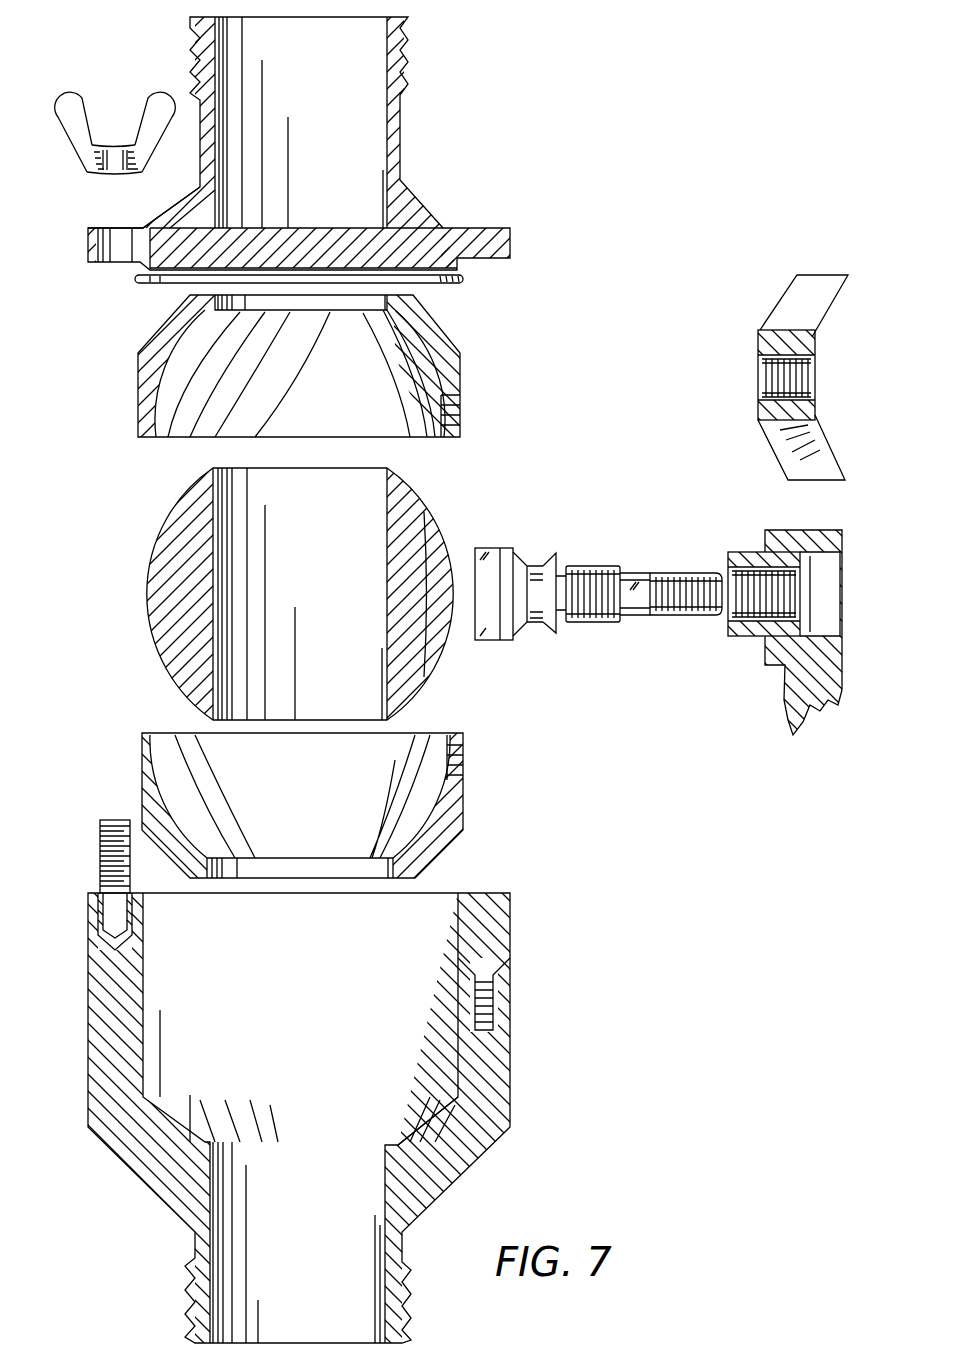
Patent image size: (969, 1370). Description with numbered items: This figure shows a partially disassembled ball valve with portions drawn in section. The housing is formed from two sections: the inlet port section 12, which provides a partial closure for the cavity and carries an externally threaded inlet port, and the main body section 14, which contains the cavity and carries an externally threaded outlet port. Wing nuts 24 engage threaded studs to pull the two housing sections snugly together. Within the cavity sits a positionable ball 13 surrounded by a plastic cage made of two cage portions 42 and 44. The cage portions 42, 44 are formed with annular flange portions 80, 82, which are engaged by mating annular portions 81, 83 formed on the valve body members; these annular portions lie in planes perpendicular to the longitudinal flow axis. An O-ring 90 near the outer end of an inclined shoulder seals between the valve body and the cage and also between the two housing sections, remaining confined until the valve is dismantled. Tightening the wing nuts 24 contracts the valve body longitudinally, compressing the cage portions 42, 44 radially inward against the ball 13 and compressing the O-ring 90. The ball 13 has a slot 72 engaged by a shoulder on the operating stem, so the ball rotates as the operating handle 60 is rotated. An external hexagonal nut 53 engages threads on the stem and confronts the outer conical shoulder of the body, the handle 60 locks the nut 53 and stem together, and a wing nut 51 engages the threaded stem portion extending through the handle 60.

The inlet port section 12 is at (299, 143).
The positionable ball 13 is at (293, 594).
The main body section 14 is at (339, 1118).
The wing nut 24 is at (64, 126).
The cage portion 42 is at (265, 337).
The cage portion 44 is at (468, 803).
The wing nut 51 is at (788, 297).
The external hexagonal nut 53 is at (757, 550).
The operating handle 60 is at (786, 688).
The slot 72 is at (436, 542).
The annular flange portion 80 is at (200, 880).
The annular portion 81 is at (397, 230).
The annular flange portion 82 is at (266, 293).
The annular portion 83 is at (396, 1143).
The O-ring 90 is at (467, 280).